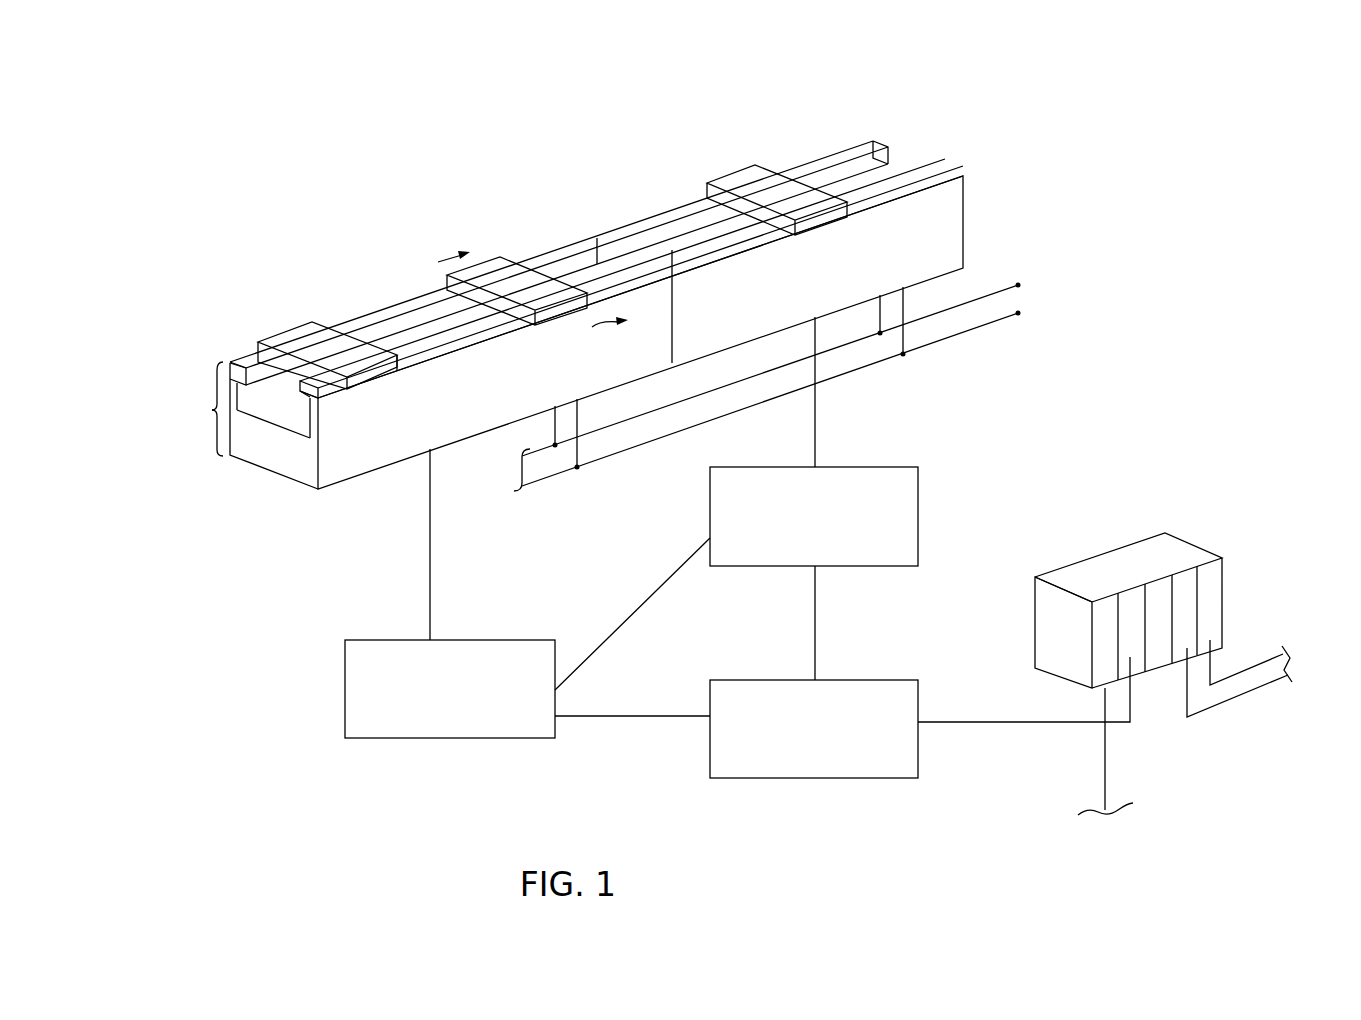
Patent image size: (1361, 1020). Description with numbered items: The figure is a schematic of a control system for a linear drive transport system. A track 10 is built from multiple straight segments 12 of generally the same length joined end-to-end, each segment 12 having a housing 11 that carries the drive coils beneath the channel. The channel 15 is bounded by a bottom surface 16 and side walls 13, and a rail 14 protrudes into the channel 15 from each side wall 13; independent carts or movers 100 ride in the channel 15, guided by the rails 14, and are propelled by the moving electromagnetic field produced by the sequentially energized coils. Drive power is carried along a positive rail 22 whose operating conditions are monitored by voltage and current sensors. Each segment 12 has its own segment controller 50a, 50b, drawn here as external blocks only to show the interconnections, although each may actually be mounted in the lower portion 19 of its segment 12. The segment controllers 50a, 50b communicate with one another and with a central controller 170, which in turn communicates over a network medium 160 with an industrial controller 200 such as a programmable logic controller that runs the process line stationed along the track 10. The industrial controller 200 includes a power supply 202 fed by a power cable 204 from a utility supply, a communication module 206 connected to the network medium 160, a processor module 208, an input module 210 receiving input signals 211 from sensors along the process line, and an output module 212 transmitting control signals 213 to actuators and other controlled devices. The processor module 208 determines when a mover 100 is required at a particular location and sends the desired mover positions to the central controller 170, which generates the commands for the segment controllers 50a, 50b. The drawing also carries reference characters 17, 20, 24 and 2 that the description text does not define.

The track 10 is at (930, 86).
The housing 11 is at (494, 392).
The track segment 12 is at (630, 222).
The side walls 13 is at (612, 266).
The rail 14 is at (366, 322).
The channel 15 is at (868, 178).
The bottom surface 16 is at (287, 420).
The height of track 17 is at (217, 388).
The lower portion 19 is at (217, 430).
The power supply 20 is at (1078, 250).
The positive rail 22 is at (990, 288).
The DC bus negative conductor 24 is at (985, 328).
The segment controller 50a is at (462, 640).
The segment controller 50b is at (878, 466).
The mover 100 is at (305, 336).
The network medium 160 is at (652, 593).
The central controller 170 is at (746, 779).
The industrial controller 200 is at (1098, 600).
The power supply 202 is at (1098, 600).
The power cable 204 is at (1105, 776).
The communication module 206 is at (1130, 597).
The processor module 208 is at (1163, 590).
The input module 210 is at (1187, 583).
The input signals 211 is at (1233, 702).
The output module 212 is at (1210, 568).
The control signals 213 is at (1250, 670).
The section line 2- 2 is at (544, 284).